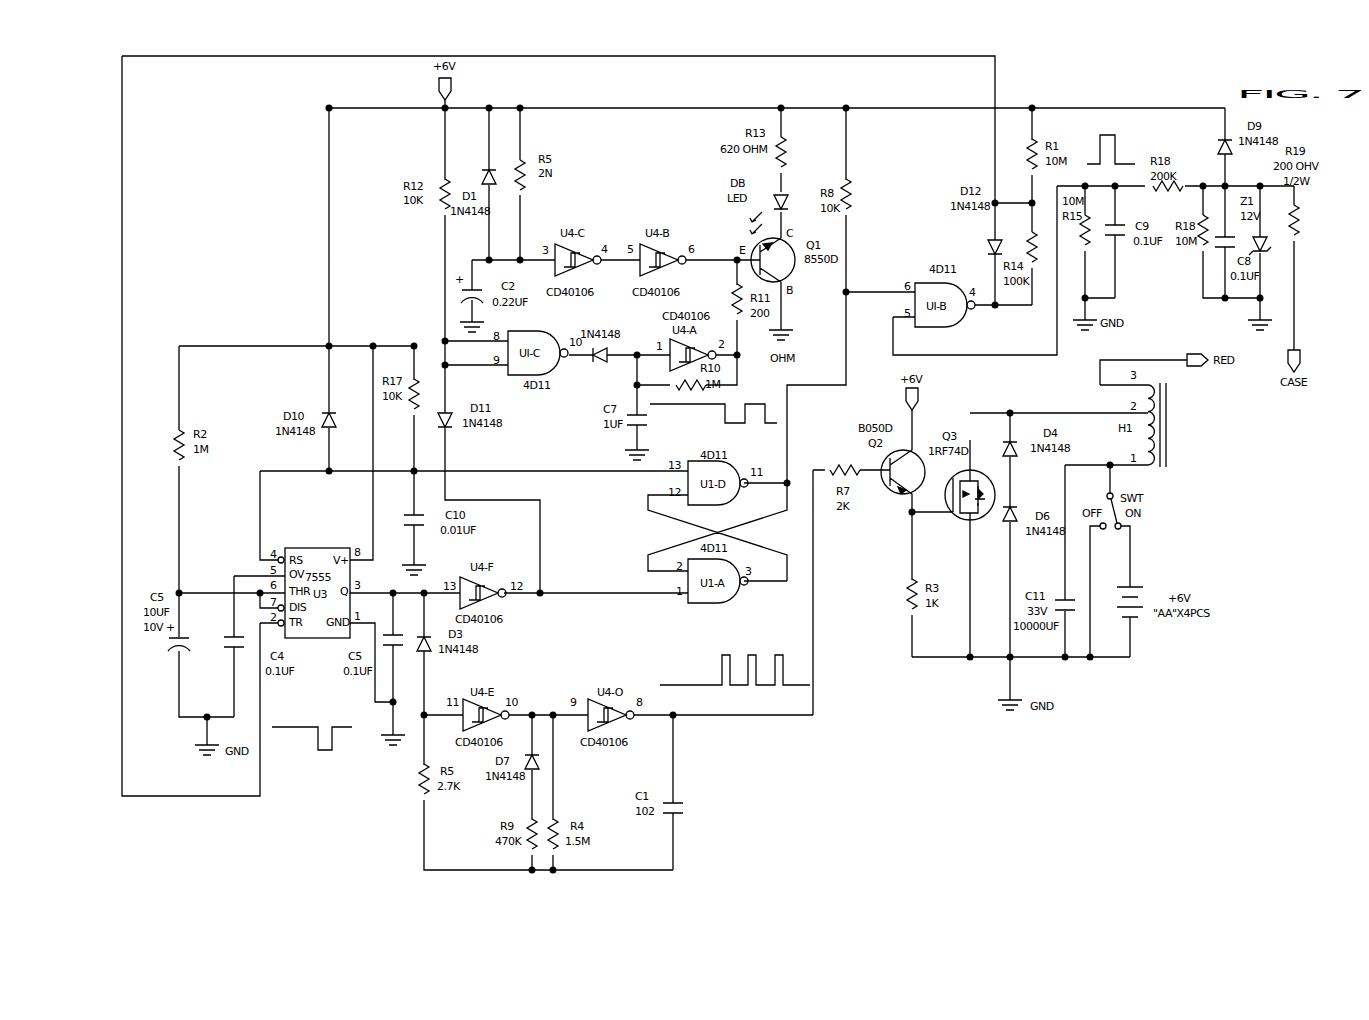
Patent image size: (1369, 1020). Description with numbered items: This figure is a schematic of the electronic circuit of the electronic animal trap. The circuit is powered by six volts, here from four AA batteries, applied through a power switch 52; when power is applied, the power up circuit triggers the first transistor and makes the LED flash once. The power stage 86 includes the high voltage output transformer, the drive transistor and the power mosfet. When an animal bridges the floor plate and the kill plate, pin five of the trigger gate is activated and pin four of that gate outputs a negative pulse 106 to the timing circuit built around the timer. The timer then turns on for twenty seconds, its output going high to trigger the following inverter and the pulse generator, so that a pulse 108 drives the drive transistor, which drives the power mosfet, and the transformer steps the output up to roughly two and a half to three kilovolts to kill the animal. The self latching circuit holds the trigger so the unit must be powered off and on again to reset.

The power switch 52 is at (1143, 507).
The drive circuit 86 is at (1165, 732).
The negative pulse 106 is at (330, 752).
The pulse 108 is at (722, 659).